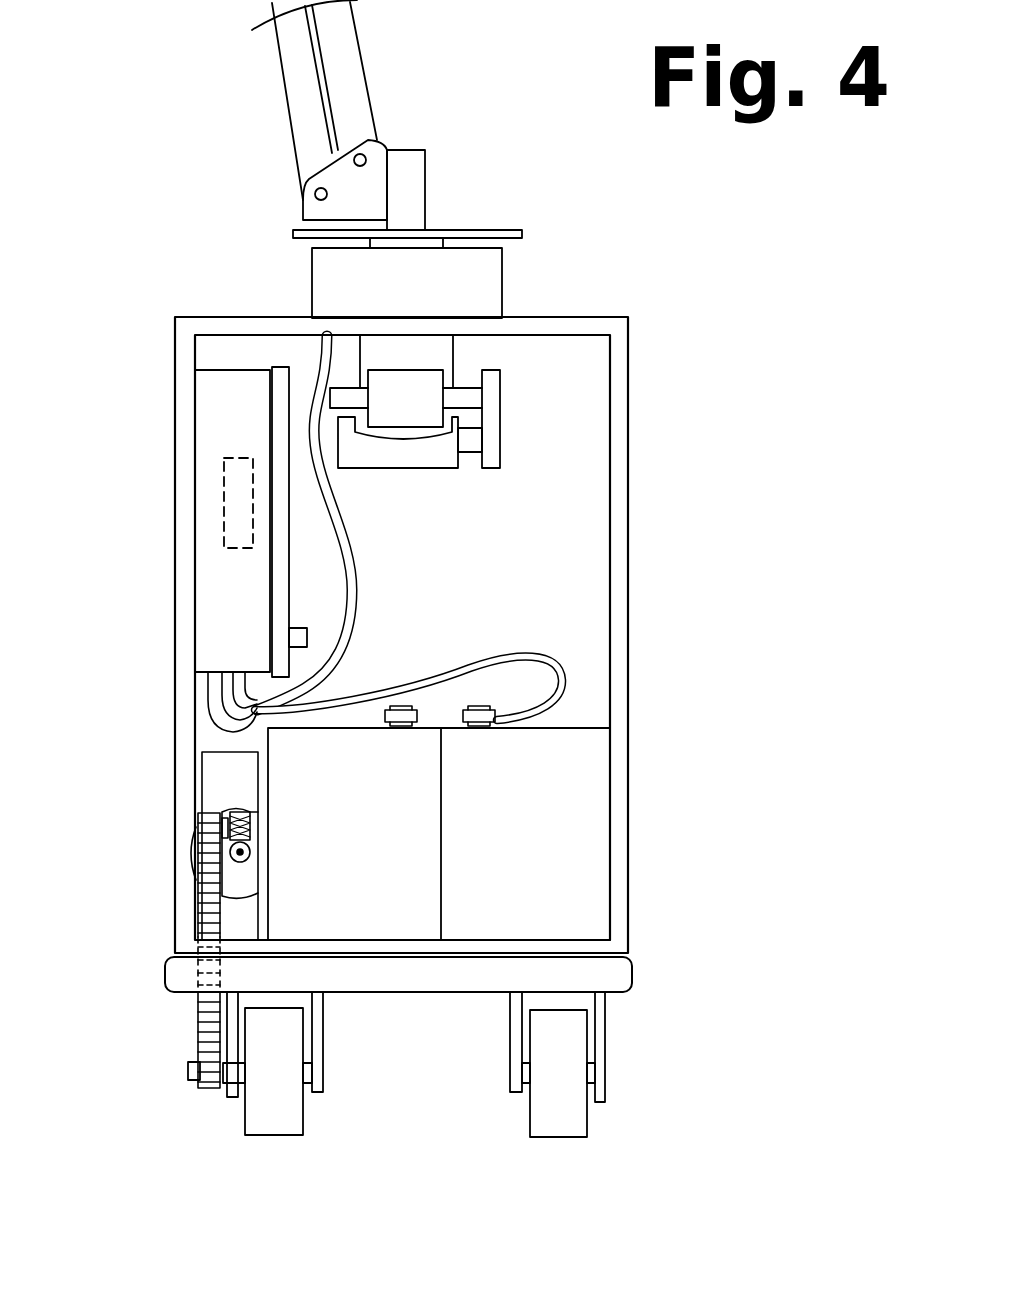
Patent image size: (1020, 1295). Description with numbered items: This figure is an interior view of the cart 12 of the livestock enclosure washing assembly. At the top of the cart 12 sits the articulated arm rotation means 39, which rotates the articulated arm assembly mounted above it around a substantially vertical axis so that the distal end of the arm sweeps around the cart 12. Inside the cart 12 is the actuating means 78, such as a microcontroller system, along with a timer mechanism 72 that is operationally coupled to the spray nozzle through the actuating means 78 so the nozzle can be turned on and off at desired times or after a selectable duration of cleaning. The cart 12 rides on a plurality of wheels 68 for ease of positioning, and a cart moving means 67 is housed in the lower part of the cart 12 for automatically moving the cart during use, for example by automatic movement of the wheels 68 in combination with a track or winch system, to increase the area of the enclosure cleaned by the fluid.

The cart 12 is at (622, 647).
The articulated arm rotation means 39 is at (345, 283).
The actuating means 78 is at (215, 410).
The timer mechanism 72 is at (237, 502).
The cart moving means 67 is at (237, 877).
The wheels 68 is at (270, 1107).